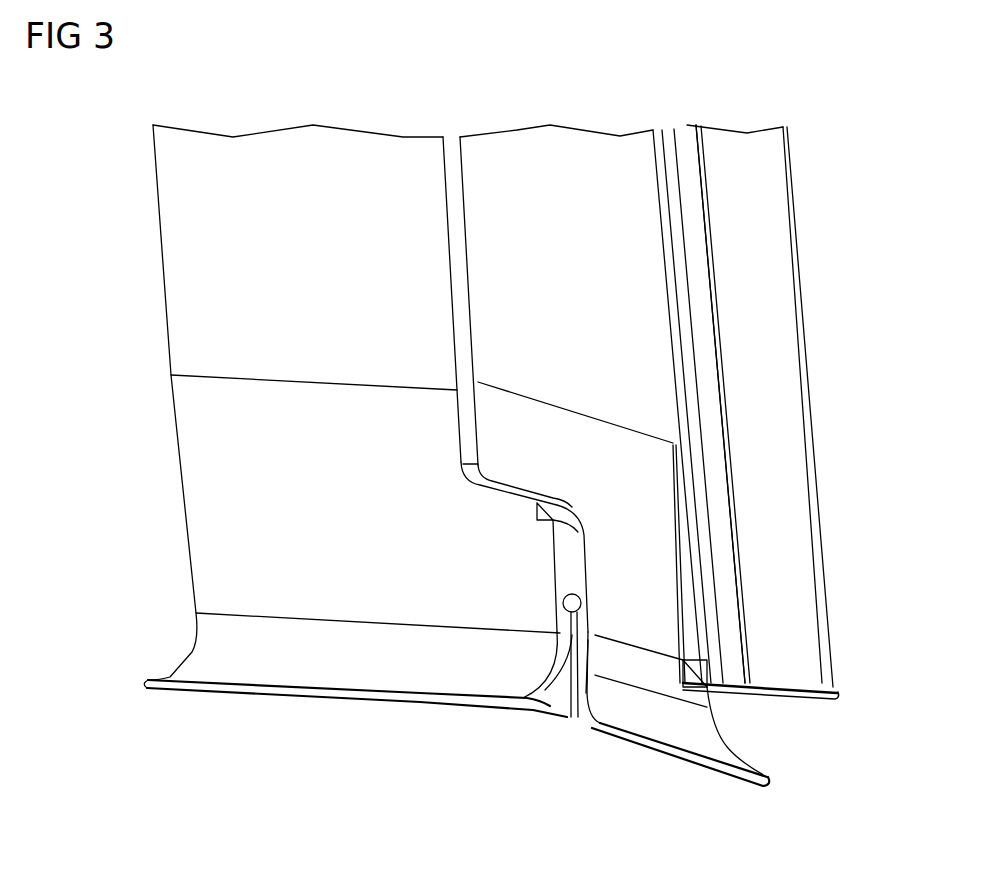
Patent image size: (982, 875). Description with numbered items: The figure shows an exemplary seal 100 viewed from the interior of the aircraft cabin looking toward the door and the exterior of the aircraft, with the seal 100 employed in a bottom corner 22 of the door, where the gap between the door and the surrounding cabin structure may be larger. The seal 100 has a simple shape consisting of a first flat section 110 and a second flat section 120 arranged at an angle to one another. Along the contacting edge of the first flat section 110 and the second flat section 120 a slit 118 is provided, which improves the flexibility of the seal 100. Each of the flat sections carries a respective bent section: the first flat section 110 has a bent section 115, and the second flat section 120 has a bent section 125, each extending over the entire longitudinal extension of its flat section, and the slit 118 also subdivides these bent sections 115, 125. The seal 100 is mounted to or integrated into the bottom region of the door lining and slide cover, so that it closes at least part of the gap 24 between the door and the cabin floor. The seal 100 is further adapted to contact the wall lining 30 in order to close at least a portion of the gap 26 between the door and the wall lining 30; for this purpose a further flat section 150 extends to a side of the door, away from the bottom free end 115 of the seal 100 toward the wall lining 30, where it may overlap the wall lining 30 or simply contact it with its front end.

The seal 100 is at (118, 295).
The gap 24 is at (135, 375).
The second flat section 120 is at (230, 575).
The bent section 125 is at (360, 665).
The slit 118 is at (572, 720).
The gap 26 is at (698, 98).
The further flat section 150 is at (688, 157).
The wall lining 30 is at (773, 260).
The bottom corner 22 is at (850, 480).
The bent section 115 is at (692, 733).
The first flat section 110 is at (637, 573).